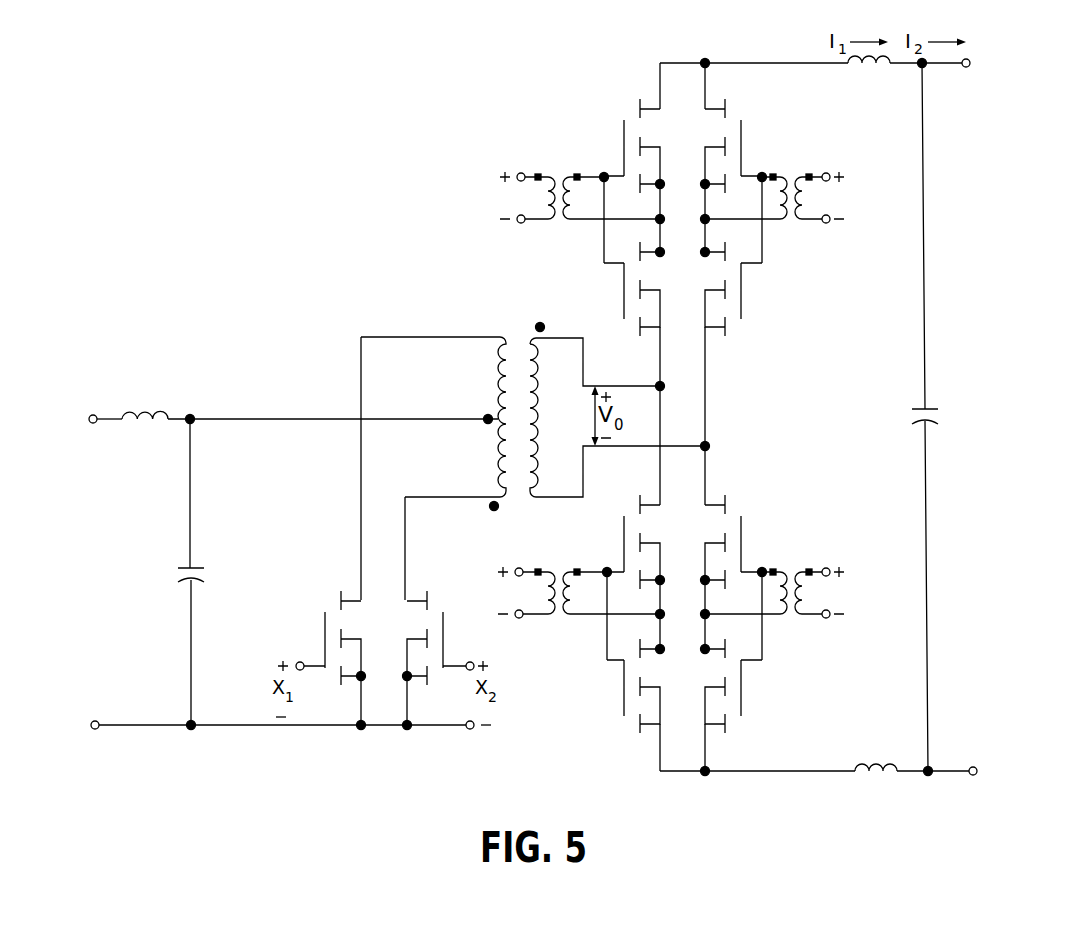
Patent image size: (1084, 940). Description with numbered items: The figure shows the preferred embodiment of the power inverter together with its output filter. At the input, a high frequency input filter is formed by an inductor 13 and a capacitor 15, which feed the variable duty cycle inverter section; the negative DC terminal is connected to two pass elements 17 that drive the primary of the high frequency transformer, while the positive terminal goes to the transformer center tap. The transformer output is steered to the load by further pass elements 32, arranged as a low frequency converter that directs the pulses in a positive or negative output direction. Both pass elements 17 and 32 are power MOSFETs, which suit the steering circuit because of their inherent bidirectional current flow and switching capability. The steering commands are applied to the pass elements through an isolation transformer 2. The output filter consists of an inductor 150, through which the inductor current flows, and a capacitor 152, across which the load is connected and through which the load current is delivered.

The isolation transformer 2 is at (557, 240).
The inductor 13 is at (150, 409).
The capacitor 15 is at (194, 564).
The pass element 17 is at (311, 635).
The pass element 32 is at (610, 154).
The inductor 150 is at (874, 66).
The capacitor 152 is at (918, 405).